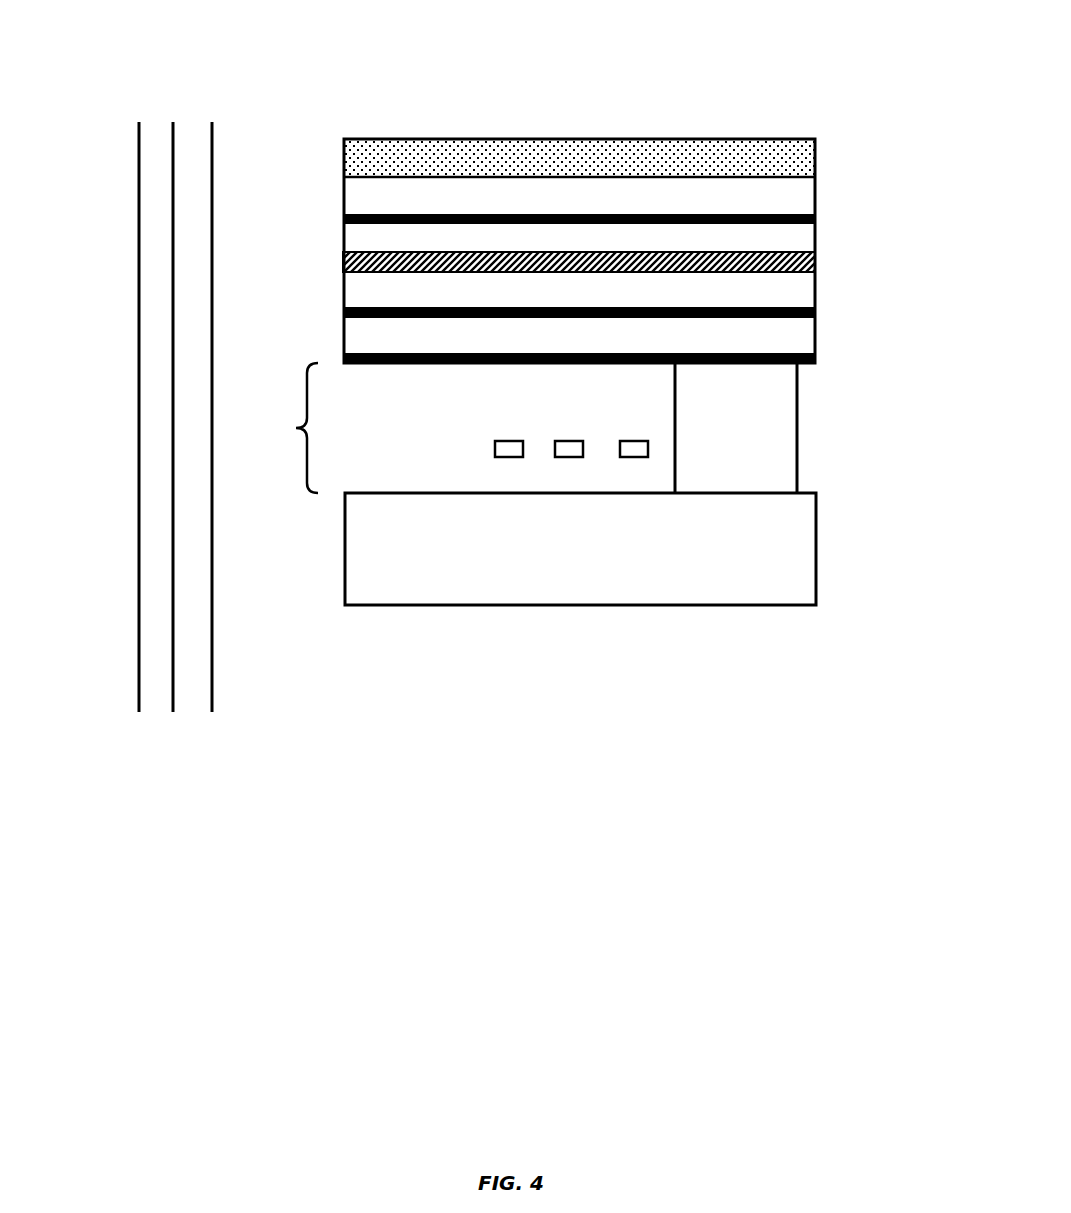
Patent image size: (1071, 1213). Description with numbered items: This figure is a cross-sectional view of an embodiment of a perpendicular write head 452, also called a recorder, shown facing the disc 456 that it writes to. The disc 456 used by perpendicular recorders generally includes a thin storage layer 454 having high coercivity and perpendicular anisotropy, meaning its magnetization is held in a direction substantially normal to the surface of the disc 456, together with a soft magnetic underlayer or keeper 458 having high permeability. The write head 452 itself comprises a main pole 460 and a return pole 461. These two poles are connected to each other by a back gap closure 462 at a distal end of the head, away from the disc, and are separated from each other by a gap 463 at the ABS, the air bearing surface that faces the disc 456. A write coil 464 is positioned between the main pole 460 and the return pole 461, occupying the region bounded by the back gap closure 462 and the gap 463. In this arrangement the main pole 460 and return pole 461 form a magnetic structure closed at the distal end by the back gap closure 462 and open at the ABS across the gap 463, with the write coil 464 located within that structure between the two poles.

The perpendicular write head 452 is at (582, 311).
The thin storage layer 454 is at (192, 158).
The disc 456 is at (168, 76).
The soft magnetic underlayer 458 is at (153, 158).
The main pole 460 is at (822, 229).
The return pole 461 is at (816, 540).
The back gap closure 462 is at (798, 447).
The gap 463 is at (440, 428).
The write coil 464 is at (633, 440).
The air bearing surface ABS is at (338, 552).